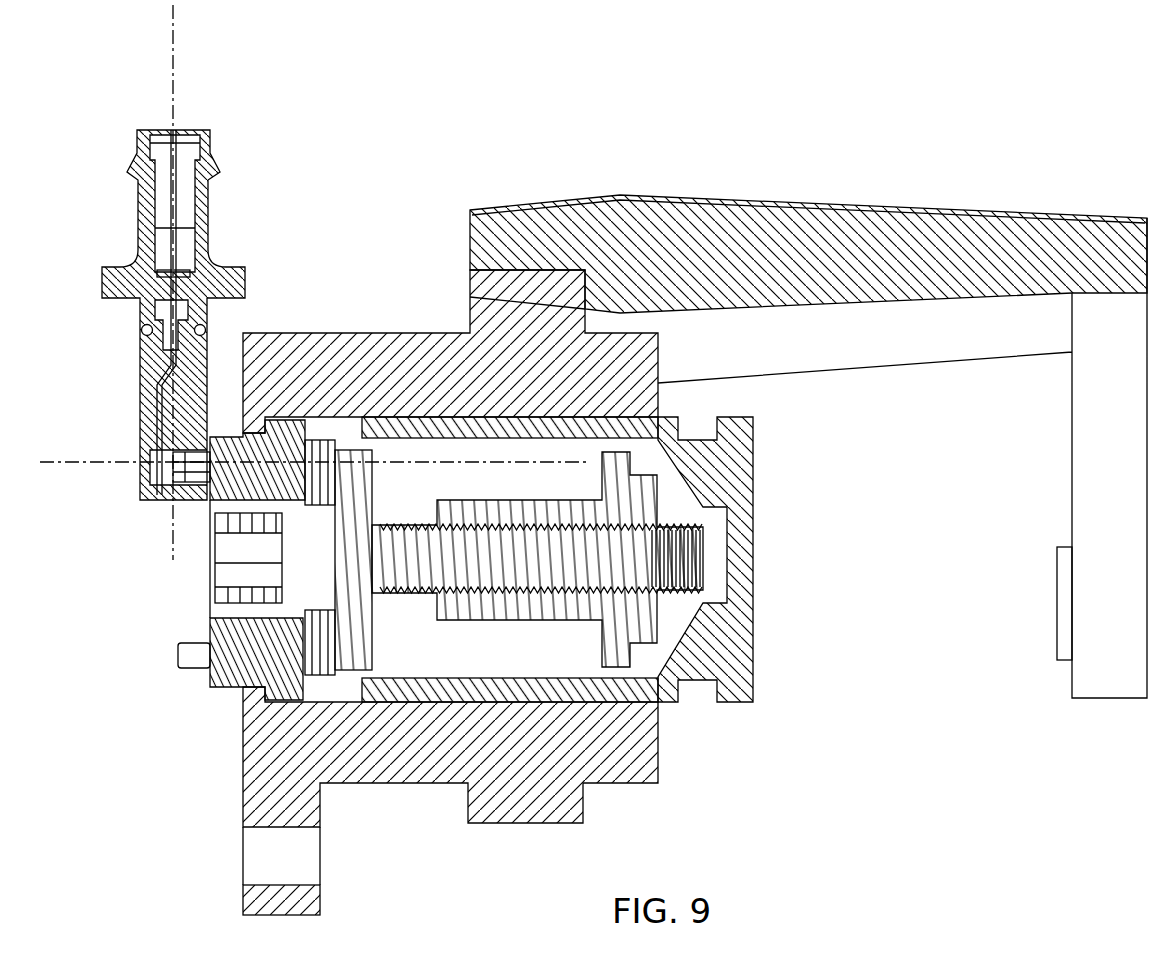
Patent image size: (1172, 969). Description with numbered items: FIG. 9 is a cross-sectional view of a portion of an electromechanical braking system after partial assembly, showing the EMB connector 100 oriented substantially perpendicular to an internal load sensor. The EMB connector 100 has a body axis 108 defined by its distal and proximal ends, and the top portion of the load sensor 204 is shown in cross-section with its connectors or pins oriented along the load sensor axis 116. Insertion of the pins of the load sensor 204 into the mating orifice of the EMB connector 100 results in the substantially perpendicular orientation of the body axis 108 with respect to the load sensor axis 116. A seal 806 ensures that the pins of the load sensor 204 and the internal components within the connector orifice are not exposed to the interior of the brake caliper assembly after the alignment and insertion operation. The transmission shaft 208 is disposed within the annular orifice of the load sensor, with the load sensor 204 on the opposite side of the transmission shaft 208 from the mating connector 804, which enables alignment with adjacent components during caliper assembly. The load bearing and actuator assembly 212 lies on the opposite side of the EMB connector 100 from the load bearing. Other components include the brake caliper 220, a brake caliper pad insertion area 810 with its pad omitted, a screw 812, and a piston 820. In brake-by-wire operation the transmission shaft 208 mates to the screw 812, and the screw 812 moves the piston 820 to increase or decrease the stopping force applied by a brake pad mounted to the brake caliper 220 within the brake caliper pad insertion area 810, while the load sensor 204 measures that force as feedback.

The EMB connector 100 is at (226, 197).
The body axis 108 is at (176, 48).
The load sensor axis 116 is at (424, 460).
The load sensor 204 is at (288, 447).
The transmission shaft 208 is at (225, 553).
The load bearing and actuator assembly 212 is at (312, 685).
The brake caliper 220 is at (843, 222).
The mating connector 804 is at (182, 656).
The seal 806 is at (146, 452).
The brake caliper pad insertion area 810 is at (852, 604).
The screw 812 is at (628, 565).
The piston 820 is at (755, 500).